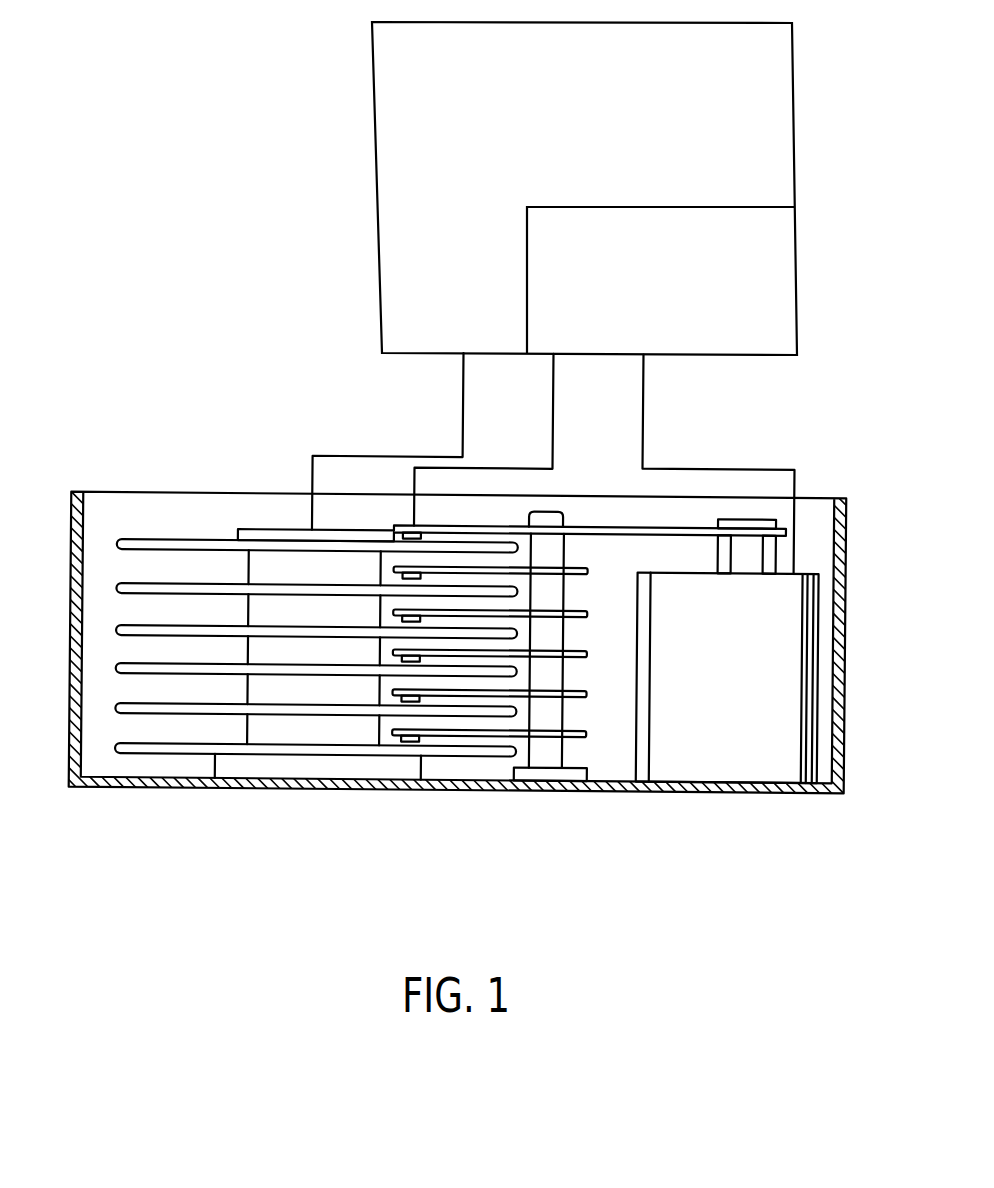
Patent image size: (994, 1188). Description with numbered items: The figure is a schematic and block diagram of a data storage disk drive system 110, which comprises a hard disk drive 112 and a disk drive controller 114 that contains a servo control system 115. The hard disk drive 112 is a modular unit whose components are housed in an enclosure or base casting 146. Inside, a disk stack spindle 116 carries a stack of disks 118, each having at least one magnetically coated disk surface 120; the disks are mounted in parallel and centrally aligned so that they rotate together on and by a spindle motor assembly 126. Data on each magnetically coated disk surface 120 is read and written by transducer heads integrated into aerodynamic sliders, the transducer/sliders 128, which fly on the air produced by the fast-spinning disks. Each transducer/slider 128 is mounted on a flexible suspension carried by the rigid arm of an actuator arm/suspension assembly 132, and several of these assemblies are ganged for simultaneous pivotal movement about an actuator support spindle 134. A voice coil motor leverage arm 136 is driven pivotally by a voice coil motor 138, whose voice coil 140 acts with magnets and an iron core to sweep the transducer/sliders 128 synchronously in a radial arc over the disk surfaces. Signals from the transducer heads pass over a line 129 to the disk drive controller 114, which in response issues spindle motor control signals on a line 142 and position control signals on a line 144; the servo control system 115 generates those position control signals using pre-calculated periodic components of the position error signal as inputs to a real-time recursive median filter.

The data storage disk drive system 110 is at (497, 428).
The hard disk drive 112 is at (497, 591).
The disk drive controller 114 is at (765, 67).
The servo control system 115 is at (777, 229).
The disk stack spindle 116 is at (269, 633).
The disks 118 is at (117, 632).
The magnetically coated disk surface 120 is at (127, 538).
The spindle motor assembly 126 is at (305, 728).
The transducer/slider 128 is at (397, 530).
The line 129 is at (553, 421).
The actuator arm/suspension assembly 132 is at (587, 573).
The actuator support spindle 134 is at (568, 749).
The voice coil motor leverage arm 136 is at (615, 526).
The voice coil motor 138 is at (747, 758).
The voice coil 140 is at (776, 549).
The line 142 is at (360, 457).
The line 144 is at (694, 467).
The enclosure or base casting 146 is at (868, 711).